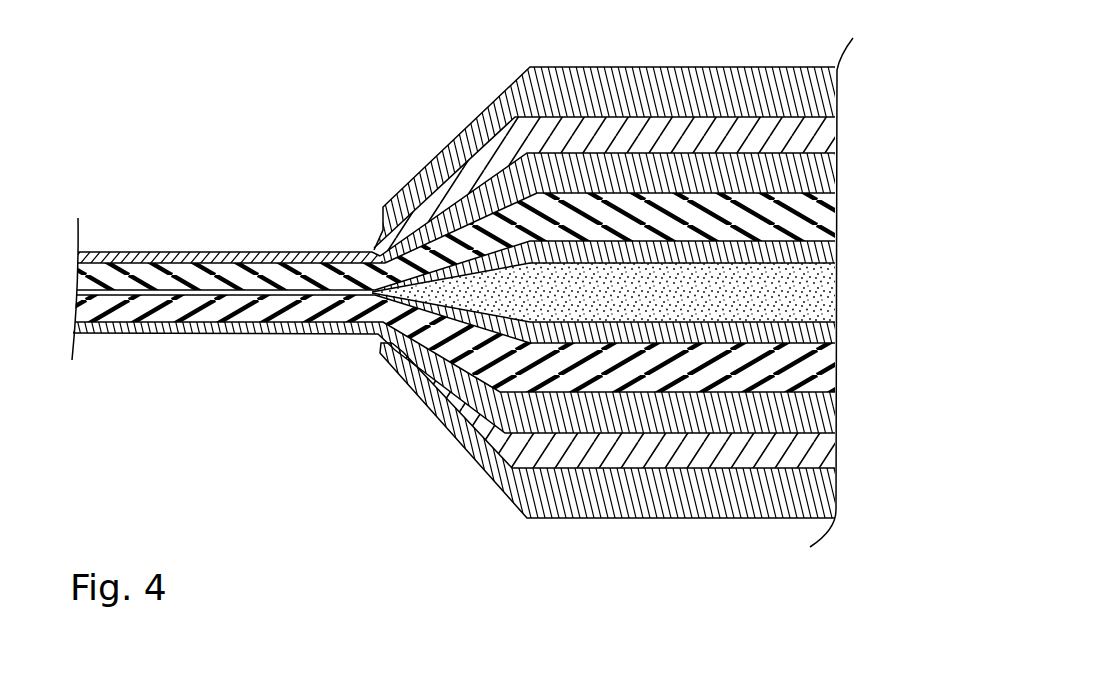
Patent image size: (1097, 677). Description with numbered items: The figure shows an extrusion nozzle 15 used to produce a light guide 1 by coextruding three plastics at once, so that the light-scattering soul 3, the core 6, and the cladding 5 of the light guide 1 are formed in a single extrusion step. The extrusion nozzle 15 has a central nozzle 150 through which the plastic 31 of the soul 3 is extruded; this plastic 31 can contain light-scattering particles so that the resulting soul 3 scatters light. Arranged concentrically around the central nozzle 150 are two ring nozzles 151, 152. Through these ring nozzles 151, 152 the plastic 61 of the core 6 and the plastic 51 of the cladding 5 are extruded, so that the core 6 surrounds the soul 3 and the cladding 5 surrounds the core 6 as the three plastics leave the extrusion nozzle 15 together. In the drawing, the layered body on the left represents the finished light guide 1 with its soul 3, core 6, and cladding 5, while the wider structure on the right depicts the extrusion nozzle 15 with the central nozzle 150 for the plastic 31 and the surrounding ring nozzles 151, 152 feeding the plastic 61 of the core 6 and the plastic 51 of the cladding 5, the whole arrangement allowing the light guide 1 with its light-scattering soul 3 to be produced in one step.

The light guide 1 is at (131, 358).
The soul 3 is at (132, 287).
The cladding 5 is at (175, 250).
The core 6 is at (245, 248).
The extrusion nozzle 15 is at (498, 100).
The plastic of the soul 31 is at (677, 293).
The plastic of the cladding 51 is at (517, 463).
The plastic of the core 61 is at (405, 382).
The central nozzle 150 is at (380, 308).
The ring nozzle 151 is at (366, 244).
The ring nozzle 152 is at (377, 242).